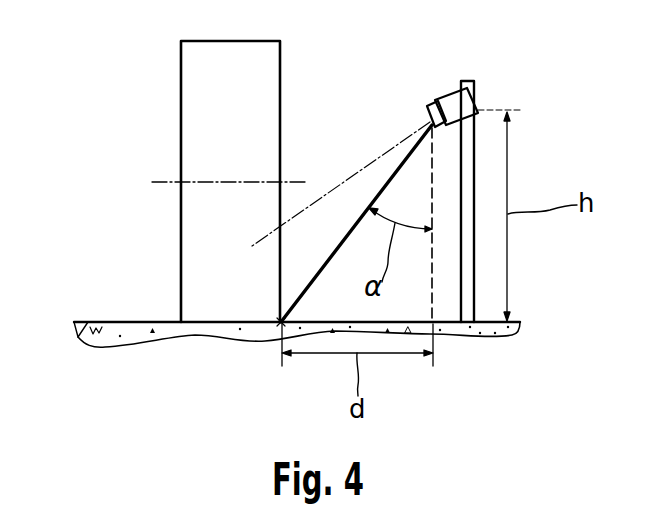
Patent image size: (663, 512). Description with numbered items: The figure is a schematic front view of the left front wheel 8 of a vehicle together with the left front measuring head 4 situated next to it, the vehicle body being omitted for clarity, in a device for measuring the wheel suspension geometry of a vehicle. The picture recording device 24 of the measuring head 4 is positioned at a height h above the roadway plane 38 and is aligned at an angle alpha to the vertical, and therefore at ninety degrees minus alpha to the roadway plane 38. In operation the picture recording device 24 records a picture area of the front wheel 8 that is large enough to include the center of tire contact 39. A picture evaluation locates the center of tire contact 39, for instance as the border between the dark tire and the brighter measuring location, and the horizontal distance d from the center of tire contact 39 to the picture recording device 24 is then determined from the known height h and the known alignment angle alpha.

The left front measuring head 4 is at (468, 91).
The left front wheel 8 is at (189, 125).
The picture recording device 24 is at (450, 105).
The roadway plane 38 is at (78, 337).
The center of tire contact 39 is at (281, 323).